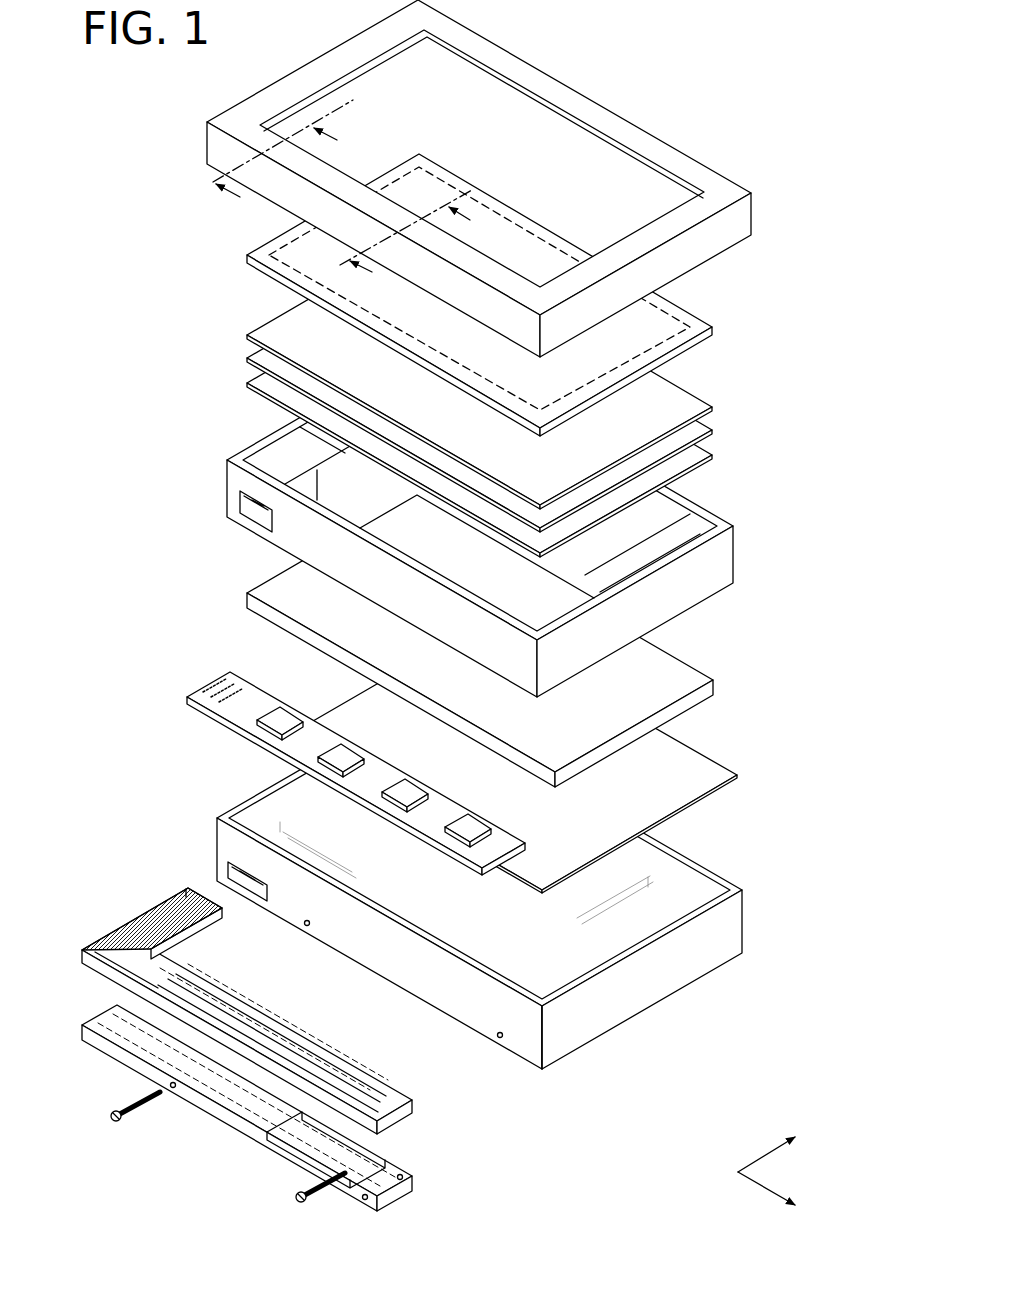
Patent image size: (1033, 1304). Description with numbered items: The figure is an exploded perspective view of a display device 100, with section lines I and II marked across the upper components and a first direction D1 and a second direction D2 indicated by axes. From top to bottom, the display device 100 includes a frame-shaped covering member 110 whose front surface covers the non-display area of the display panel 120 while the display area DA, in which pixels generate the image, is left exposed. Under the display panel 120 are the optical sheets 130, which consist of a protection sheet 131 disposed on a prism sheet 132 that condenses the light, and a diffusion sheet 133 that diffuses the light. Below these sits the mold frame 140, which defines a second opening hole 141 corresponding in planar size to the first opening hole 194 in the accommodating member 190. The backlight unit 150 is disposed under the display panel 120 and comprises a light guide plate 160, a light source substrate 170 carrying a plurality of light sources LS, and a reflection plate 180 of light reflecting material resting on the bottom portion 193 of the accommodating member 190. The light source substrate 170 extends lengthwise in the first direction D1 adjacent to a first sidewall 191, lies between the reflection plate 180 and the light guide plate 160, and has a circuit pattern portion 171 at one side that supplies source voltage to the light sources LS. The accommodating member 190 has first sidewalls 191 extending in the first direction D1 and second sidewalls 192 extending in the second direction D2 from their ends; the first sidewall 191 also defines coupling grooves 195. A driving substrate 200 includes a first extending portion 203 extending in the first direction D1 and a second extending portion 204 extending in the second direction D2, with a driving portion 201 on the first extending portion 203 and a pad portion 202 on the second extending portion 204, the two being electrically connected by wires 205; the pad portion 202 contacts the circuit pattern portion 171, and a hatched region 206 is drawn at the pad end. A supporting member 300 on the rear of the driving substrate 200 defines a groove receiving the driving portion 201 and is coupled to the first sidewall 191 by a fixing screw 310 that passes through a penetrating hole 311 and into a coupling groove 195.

The display device 100 is at (716, 62).
The covering member 110 is at (748, 212).
The display panel 120 is at (540, 295).
The display area DA is at (665, 318).
The optical sheets 130 is at (544, 396).
The protection sheet 131 is at (712, 403).
The prism sheet 132 is at (712, 428).
The diffusion sheet 133 is at (712, 453).
The mold frame 140 is at (511, 521).
The second opening hole 141 is at (243, 525).
The backlight unit 150 is at (517, 697).
The light guide plate 160 is at (540, 644).
The light source substrate 170 is at (490, 773).
The circuit pattern portion 171 is at (214, 704).
The light source LS is at (268, 730).
The reflection plate 180 is at (722, 770).
The accommodating member 190 is at (494, 885).
The first sidewall 191 is at (400, 975).
The second sidewall 192 is at (262, 812).
The bottom portion 193 is at (590, 962).
The first opening hole 194 is at (230, 886).
The coupling groove 195 is at (305, 925).
The driving substrate 200 is at (267, 1008).
The driving portion 201 is at (367, 1077).
The pad portion 202 is at (160, 906).
The first extending portion 203 is at (270, 1027).
The second extending portion 204 is at (182, 892).
The wire 205 is at (187, 988).
The cover edge 206 is at (130, 925).
The supporting member 300 is at (261, 1122).
The fixing screw 310 is at (112, 1120).
The penetrating hole 311 is at (173, 1090).
The line I-I' I is at (283, 160).
The line II-II' II is at (413, 243).
The first direction D1 is at (783, 1200).
The second direction D2 is at (783, 1146).